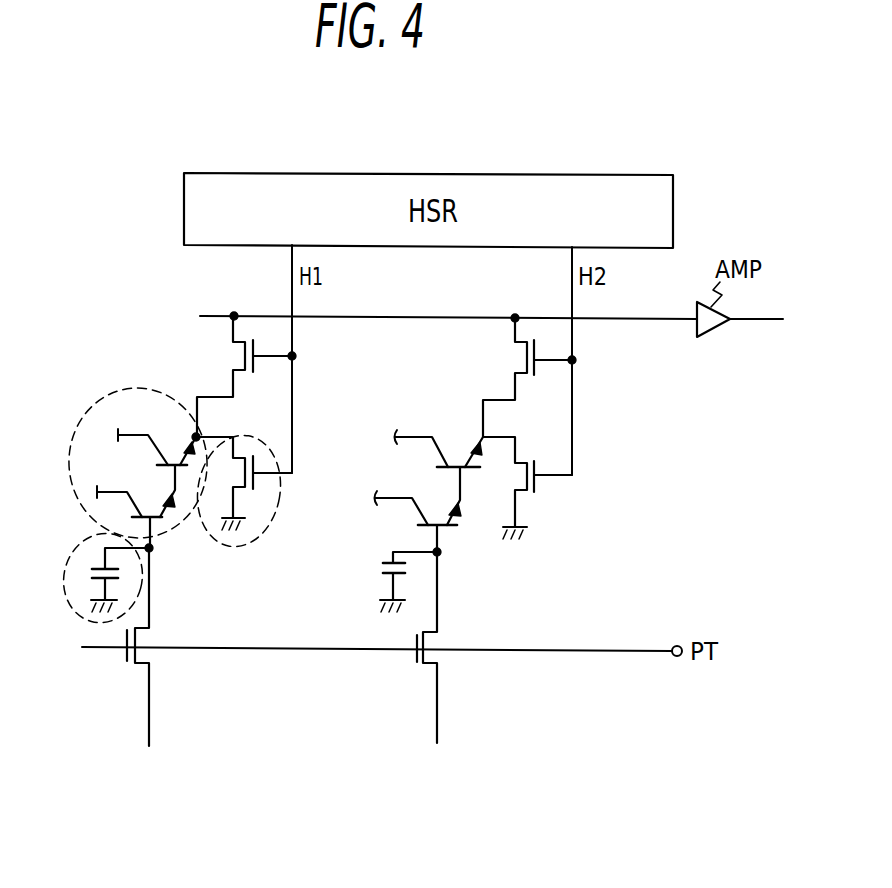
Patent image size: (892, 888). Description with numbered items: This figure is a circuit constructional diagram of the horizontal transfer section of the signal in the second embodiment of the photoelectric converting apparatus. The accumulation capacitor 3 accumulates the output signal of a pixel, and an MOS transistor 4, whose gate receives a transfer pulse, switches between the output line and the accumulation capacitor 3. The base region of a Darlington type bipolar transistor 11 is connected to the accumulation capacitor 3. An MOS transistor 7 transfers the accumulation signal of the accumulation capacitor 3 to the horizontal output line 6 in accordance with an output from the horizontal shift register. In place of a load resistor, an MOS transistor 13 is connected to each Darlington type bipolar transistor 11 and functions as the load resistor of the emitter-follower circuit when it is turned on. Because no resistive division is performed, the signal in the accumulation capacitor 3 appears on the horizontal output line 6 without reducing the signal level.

The accumulation capacitor 3 is at (73, 565).
The MOS transistor 4 is at (155, 634).
The horizontal output line 6 is at (668, 317).
The MOS transistor 7 is at (239, 352).
The Darlington type bipolar transistor 11 is at (117, 393).
The MOS transistor 13 is at (265, 514).